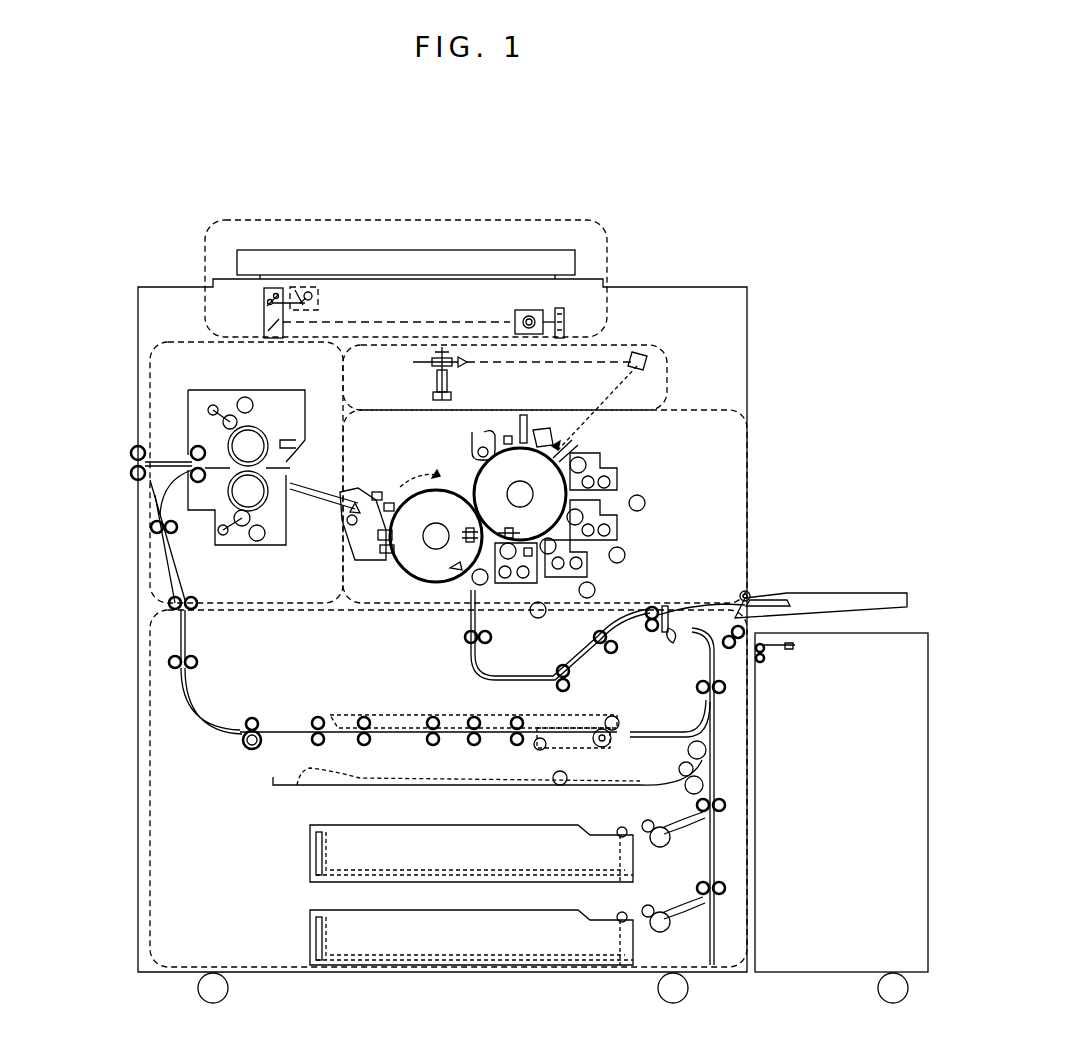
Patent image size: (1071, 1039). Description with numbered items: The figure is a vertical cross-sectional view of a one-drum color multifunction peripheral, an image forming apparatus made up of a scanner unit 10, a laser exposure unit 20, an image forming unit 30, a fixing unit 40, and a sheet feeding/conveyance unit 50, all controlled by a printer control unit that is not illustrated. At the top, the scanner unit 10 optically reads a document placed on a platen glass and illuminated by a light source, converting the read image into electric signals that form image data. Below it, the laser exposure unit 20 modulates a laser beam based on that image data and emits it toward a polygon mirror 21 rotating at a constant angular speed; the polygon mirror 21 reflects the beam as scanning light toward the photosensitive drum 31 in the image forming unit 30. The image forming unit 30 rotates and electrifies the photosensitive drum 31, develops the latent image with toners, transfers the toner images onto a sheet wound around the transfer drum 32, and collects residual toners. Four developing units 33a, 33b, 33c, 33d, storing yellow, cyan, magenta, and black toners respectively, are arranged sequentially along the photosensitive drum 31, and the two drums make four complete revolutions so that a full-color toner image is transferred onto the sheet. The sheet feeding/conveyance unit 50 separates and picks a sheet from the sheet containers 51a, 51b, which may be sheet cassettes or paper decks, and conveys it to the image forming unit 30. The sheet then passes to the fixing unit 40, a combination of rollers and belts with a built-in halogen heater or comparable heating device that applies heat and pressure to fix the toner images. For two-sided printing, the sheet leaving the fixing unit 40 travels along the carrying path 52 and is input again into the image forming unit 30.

The scanner unit 10 is at (352, 218).
The laser exposure unit 20 is at (680, 373).
The polygon mirror 21 is at (428, 363).
The image forming unit 30 is at (747, 410).
The photosensitive drum 31 is at (478, 467).
The transfer drum 32 is at (412, 583).
The developing unit 33a is at (617, 478).
The developing unit 33b is at (617, 530).
The developing unit 33c is at (590, 563).
The developing unit 33d is at (513, 587).
The fixing unit 40 is at (148, 343).
The sheet feeding/conveyance unit 50 is at (150, 610).
The sheet container 51a is at (308, 857).
The sheet container 51b is at (308, 942).
The carrying path 52 is at (347, 713).